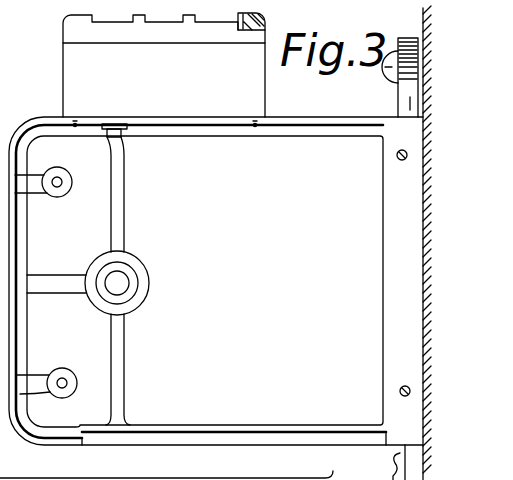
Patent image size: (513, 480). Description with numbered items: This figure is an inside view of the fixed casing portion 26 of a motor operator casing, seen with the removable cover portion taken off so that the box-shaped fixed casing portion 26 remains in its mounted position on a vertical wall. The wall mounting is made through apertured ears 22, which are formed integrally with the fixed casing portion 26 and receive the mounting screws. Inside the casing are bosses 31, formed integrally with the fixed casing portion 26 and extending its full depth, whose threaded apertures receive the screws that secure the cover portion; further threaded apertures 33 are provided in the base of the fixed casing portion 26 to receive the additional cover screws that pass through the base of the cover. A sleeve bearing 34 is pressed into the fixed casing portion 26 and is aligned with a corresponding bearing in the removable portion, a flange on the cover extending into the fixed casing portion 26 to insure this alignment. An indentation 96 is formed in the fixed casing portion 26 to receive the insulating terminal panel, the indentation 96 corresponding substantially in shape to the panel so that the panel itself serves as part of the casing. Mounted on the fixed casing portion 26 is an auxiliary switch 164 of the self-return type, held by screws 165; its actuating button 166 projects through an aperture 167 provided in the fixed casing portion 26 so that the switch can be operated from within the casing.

The apertured ears 22 is at (410, 117).
The fixed casing portion 26 is at (262, 274).
The bosses 31 is at (73, 182).
The threaded apertures 33 is at (400, 161).
The sleeve bearing 34 is at (131, 286).
The indentation 96 is at (226, 446).
The auxiliary switch 164 is at (74, 60).
The screws 165 is at (248, 32).
The actuating button 166 is at (126, 164).
The aperture 167 is at (106, 121).